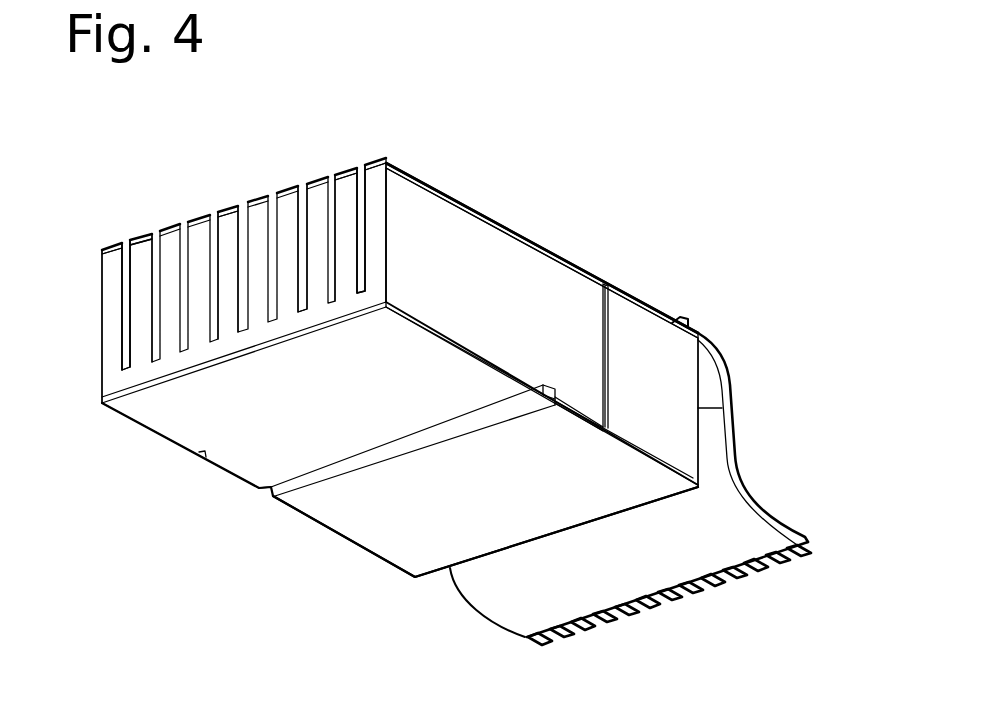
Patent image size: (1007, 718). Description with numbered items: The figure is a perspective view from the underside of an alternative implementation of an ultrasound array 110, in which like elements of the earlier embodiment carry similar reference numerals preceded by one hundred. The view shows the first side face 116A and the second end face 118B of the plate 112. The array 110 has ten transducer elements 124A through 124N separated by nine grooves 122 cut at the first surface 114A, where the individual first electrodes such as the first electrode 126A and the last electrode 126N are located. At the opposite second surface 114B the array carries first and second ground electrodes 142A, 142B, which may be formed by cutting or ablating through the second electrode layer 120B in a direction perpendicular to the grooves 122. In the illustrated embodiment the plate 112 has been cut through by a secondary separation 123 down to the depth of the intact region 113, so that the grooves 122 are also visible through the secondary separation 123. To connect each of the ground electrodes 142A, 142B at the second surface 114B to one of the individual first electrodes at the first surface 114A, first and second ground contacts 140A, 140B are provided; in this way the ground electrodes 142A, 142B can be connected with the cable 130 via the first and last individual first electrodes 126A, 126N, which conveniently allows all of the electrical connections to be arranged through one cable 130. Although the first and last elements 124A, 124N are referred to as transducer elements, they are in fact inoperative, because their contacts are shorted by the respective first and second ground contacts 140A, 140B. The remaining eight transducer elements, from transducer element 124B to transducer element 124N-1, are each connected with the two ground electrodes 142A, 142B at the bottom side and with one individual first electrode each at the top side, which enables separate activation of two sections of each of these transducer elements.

The array 110 is at (617, 114).
The plate 112 is at (700, 408).
The intact region 113 is at (102, 378).
The first surface 114A is at (547, 253).
The second surface 114B is at (368, 525).
The first side face 116A is at (512, 293).
The second end face 118B is at (230, 225).
The second electrode layer 120B is at (685, 473).
The grooves 122 is at (305, 206).
The secondary separation 123 is at (260, 490).
The first transducer element 124A is at (385, 233).
The transducer element 124B is at (352, 208).
The last transducer element 124N is at (100, 323).
The transducer element 124N-1 is at (143, 252).
The first individual first electrode 126A is at (417, 175).
The last individual first electrode 126N is at (116, 246).
The cable 130 is at (752, 477).
The first ground contact 140A is at (613, 337).
The second ground contact 140B is at (203, 455).
The first ground electrode 142A is at (504, 504).
The second ground electrode 142B is at (352, 409).